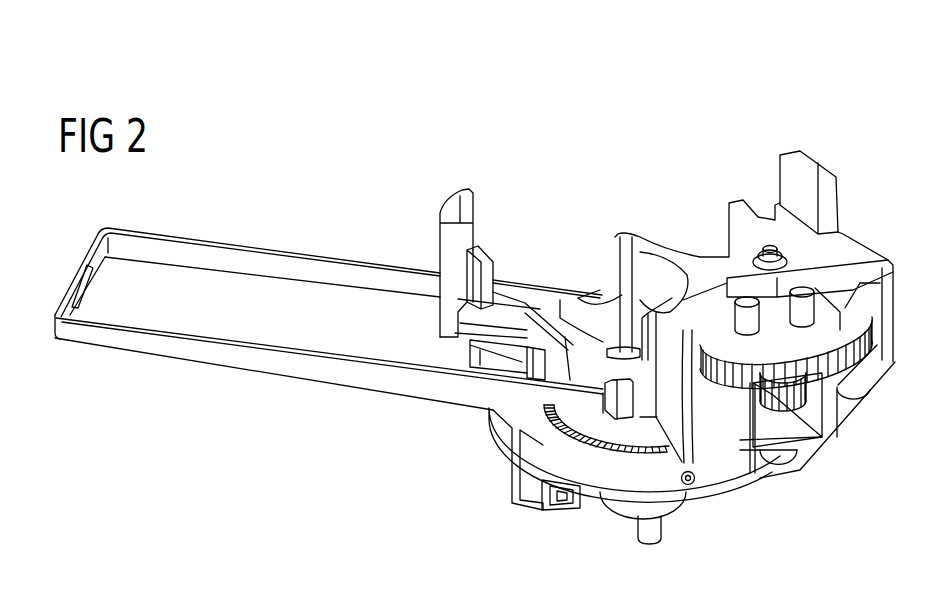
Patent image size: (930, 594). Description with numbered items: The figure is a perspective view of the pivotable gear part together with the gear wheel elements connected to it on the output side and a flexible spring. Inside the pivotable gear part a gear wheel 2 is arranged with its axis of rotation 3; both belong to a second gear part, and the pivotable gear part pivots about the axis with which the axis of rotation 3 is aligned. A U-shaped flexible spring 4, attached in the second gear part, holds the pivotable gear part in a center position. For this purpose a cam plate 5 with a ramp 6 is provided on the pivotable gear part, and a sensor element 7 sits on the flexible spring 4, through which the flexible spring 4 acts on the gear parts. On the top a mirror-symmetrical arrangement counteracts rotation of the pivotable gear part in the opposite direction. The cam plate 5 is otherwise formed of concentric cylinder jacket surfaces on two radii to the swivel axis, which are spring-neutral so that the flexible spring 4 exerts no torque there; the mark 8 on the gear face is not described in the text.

The gear wheel 2 is at (637, 427).
The axis of rotation 3 is at (635, 527).
The flexible spring 4 is at (442, 390).
The cam plate 5 is at (640, 393).
The ramp 6 is at (602, 377).
The sensor element 7 is at (596, 398).
The gear wheel 8 is at (786, 349).